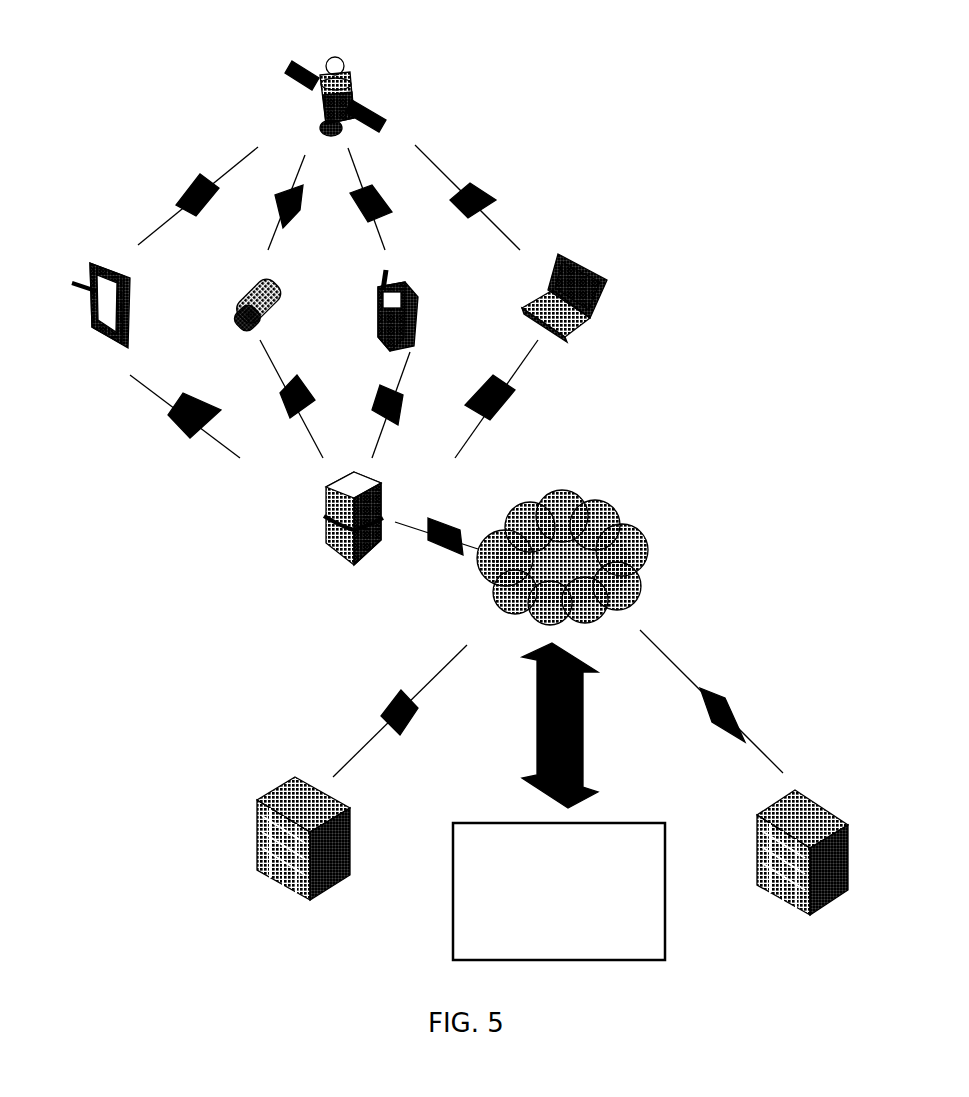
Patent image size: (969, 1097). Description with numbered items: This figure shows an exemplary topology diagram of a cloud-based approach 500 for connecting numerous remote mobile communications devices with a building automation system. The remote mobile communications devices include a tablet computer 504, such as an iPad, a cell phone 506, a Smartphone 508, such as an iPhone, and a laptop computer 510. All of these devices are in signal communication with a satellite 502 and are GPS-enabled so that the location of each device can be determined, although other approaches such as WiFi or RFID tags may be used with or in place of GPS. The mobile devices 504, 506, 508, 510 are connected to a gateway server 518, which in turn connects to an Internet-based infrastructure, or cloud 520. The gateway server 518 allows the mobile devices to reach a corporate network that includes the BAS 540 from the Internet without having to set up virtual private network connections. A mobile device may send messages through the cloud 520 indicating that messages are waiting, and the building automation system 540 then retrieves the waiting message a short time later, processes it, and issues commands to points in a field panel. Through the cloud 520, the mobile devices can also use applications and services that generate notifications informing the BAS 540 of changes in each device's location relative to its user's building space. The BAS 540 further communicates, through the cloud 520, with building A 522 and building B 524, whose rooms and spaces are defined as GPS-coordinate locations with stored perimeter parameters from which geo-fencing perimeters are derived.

The communication system 500 is at (588, 141).
The satellite 502 is at (350, 78).
The tablet computer 504 is at (97, 263).
The cell phone 506 is at (245, 308).
The Smartphone 508 is at (418, 318).
The laptop computer 510 is at (583, 262).
The gateway server 518 is at (328, 540).
The Internet-based infrastructure (cloud) 520 is at (642, 540).
The building "A" 522 is at (280, 785).
The building "B" 524 is at (815, 802).
The building automation system (BAS) 540 is at (652, 946).